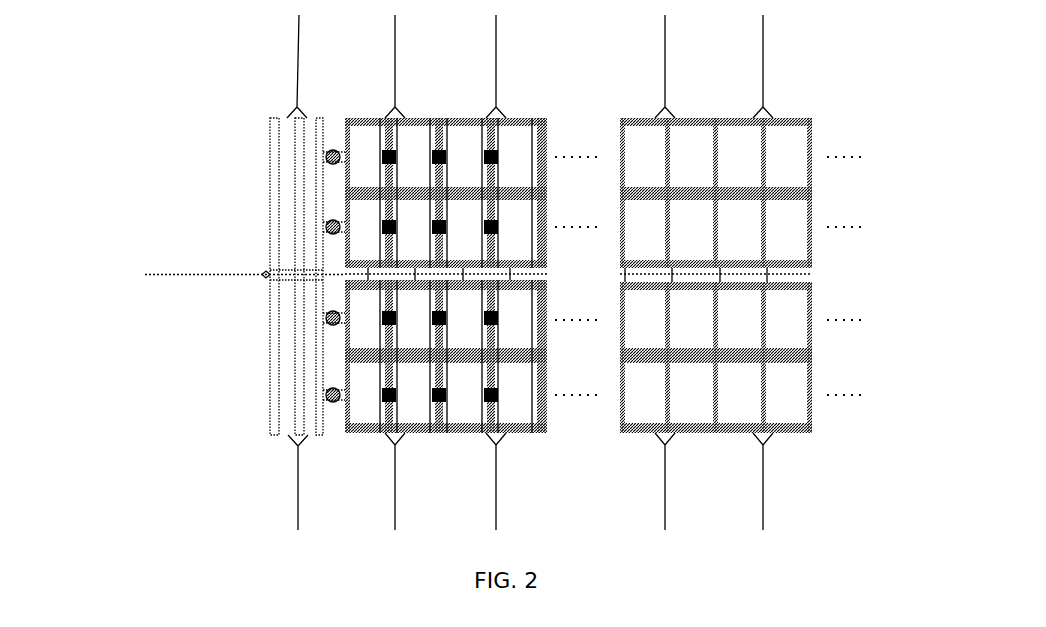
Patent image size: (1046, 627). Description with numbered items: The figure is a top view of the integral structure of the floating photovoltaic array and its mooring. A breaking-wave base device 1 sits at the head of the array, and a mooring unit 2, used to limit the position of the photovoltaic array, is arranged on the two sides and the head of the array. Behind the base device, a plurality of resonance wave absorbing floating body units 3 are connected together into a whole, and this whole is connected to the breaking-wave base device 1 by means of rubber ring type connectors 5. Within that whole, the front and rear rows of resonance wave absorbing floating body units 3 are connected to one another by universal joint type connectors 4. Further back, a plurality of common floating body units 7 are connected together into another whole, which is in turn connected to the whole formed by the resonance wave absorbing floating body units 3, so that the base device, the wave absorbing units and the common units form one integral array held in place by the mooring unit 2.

The breaking-wave base device 1 is at (298, 272).
The mooring unit 2 is at (298, 500).
The resonance wave absorbing floating body unit 3 is at (460, 348).
The universal joint type connector 4 is at (498, 395).
The rubber ring type connector 5 is at (328, 394).
The common floating body unit 7 is at (722, 345).